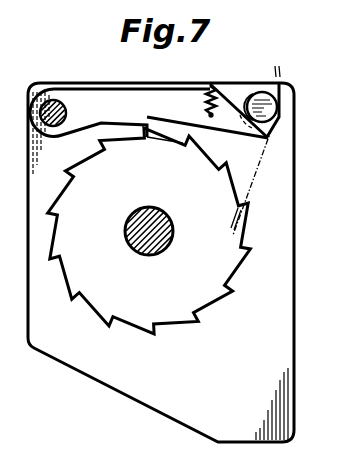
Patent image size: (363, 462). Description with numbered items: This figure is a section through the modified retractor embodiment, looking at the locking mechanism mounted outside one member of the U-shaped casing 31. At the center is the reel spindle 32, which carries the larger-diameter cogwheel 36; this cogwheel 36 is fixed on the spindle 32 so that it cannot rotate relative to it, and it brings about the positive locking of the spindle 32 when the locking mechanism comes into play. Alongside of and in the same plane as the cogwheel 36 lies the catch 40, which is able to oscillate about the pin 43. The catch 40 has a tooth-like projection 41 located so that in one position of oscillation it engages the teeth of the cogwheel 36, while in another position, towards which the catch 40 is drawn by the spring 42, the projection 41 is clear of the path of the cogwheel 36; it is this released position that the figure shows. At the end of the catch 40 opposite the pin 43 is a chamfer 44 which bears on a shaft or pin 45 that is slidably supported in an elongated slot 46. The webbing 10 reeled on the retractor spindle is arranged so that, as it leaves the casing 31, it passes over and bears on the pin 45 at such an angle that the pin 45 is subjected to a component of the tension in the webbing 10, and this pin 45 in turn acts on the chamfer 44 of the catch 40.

The webbing 10 is at (282, 67).
The casing 31 is at (277, 415).
The reel spindle 32 is at (155, 240).
The cogwheel 36 is at (223, 173).
The catch 40 is at (112, 103).
The tooth-like projection 41 is at (143, 110).
The spring 42 is at (211, 85).
The pin 43 is at (57, 102).
The chamfer 44 is at (230, 99).
The shaft or pin 45 is at (270, 110).
The elongated slot 46 is at (277, 147).